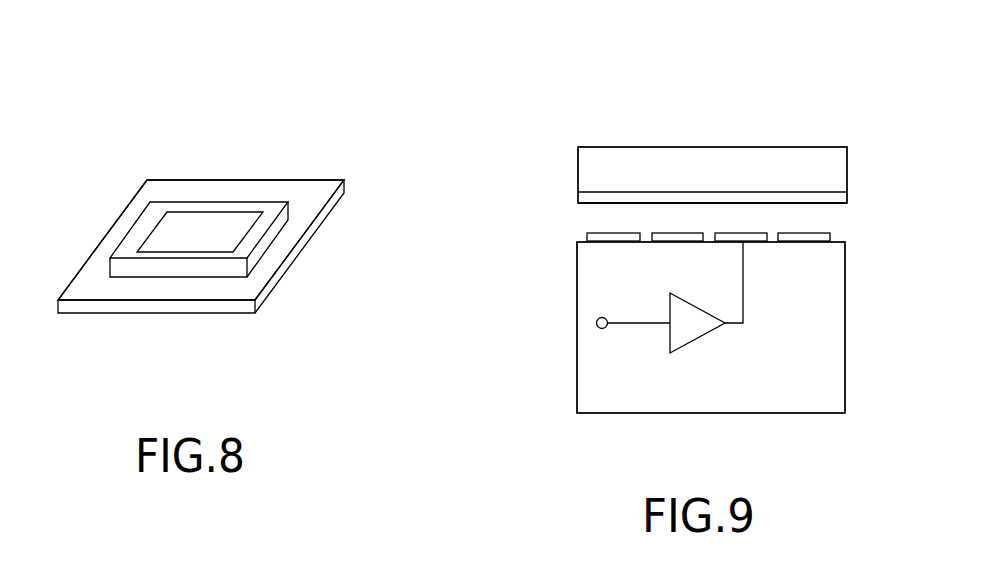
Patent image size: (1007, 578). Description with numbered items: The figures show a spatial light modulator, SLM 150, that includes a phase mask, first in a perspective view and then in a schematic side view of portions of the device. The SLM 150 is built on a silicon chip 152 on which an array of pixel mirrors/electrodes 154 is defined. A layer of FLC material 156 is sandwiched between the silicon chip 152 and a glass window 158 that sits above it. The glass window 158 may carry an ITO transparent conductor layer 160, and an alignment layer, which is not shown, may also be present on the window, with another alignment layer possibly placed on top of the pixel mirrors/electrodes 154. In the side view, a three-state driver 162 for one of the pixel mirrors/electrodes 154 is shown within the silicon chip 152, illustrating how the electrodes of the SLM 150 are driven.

In FIG. 8, the SLM 150 is at (157, 335).
In FIG. 9, the SLM 150 is at (604, 115).
In FIG. 8, the silicon chip 152 is at (270, 293).
In FIG. 9, the silicon chip 152 is at (603, 363).
In FIG. 8, the pixel mirrors/electrodes 154 is at (238, 227).
In FIG. 9, the pixel mirrors/electrodes 154 is at (597, 233).
In FIG. 9, the layer of FLC material 156 is at (772, 218).
In FIG. 8, the glass window 158 is at (275, 208).
In FIG. 9, the glass window 158 is at (668, 162).
In FIG. 9, the ITO transparent conductor layer 160 is at (593, 197).
In FIG. 9, the 3-state driver 162 is at (695, 327).